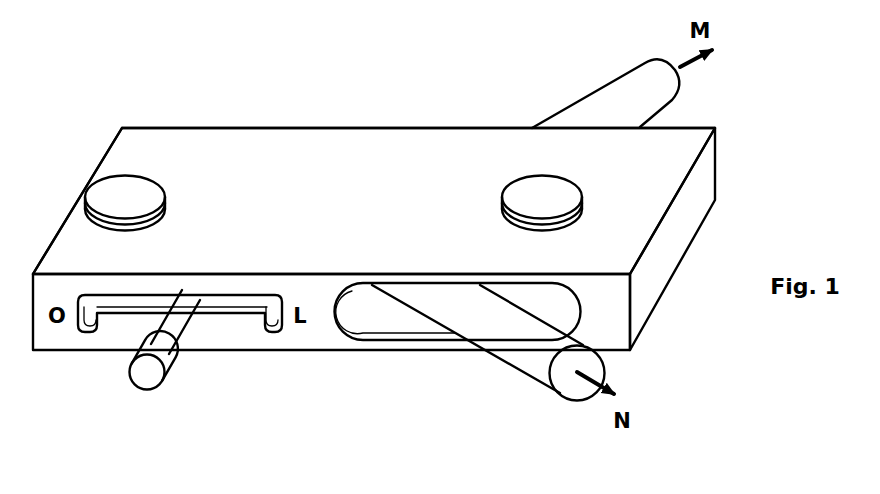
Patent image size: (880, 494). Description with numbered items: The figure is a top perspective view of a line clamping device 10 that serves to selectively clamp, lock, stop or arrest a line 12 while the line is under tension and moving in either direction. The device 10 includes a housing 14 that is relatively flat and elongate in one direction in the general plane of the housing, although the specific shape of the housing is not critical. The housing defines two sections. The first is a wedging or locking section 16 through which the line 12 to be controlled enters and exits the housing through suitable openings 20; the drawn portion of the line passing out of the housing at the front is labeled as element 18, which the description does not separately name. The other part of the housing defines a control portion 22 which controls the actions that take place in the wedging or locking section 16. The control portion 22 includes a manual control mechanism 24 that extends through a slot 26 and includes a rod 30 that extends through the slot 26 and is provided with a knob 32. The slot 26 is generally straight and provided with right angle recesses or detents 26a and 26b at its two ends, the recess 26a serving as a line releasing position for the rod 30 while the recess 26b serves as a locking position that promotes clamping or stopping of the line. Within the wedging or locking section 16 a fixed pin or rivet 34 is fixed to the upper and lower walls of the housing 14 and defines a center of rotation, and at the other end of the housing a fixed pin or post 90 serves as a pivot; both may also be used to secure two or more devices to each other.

The line clamping device 10 is at (395, 239).
The line 12 is at (620, 90).
The housing 14 is at (148, 127).
The wedging or locking section 16 is at (483, 120).
The shaft 18 is at (525, 348).
The openings 20 is at (358, 332).
The control portion 22 is at (233, 120).
The manual control mechanism 24 is at (88, 385).
The slot 26 is at (163, 354).
The recess 26a is at (85, 332).
The recess 26b is at (272, 332).
The rod 30 is at (155, 367).
The knob 32 is at (150, 373).
The fixed pin 34 is at (546, 199).
The fixed pin or post 90 is at (113, 200).